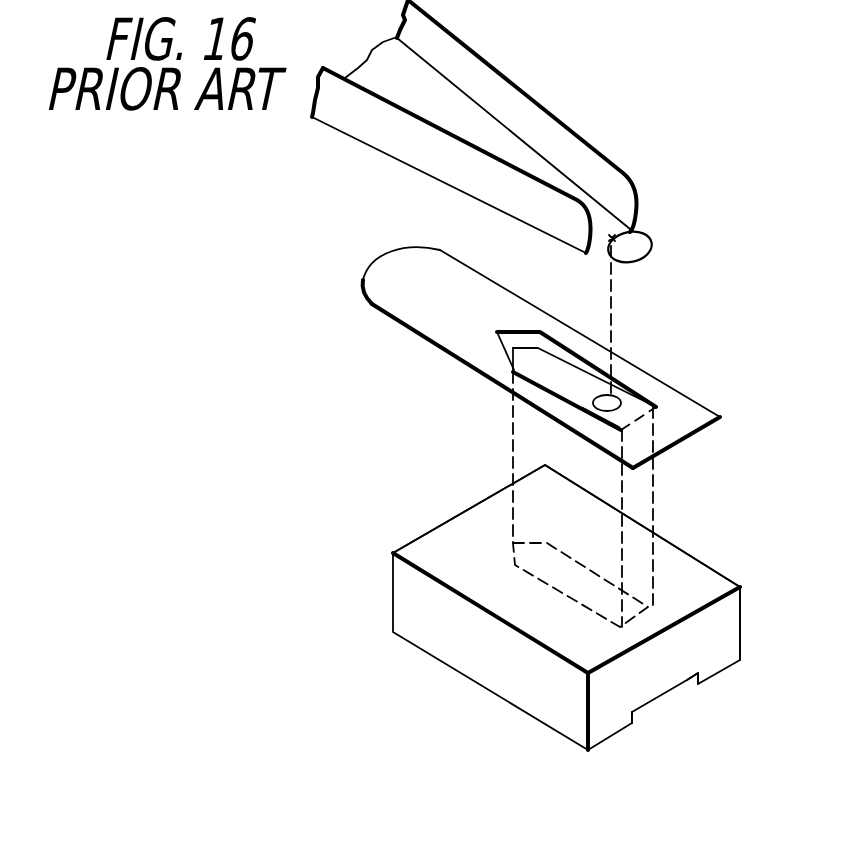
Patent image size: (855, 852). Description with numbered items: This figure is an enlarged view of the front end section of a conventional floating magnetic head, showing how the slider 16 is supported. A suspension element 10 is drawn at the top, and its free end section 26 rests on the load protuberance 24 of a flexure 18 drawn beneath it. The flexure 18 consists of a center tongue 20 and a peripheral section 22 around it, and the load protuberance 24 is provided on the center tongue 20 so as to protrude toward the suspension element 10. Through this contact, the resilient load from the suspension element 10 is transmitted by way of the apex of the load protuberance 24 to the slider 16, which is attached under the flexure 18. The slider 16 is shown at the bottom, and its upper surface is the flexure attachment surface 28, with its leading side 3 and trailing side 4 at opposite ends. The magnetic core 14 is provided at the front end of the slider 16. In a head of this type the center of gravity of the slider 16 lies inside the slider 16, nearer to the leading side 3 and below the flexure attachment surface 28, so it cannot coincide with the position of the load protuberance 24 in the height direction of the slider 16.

The suspension element 10 is at (633, 191).
The free end section 26 is at (650, 239).
The peripheral section 22 is at (393, 283).
The flexure 18 is at (703, 406).
The center tongue 20 is at (562, 377).
The load protuberance 24 is at (613, 399).
The leading side 3 is at (482, 500).
The flexure attachment surface 28 is at (425, 548).
The slider 16 is at (742, 616).
The trailing side 4 is at (657, 672).
The magnetic core 14 is at (830, 0).